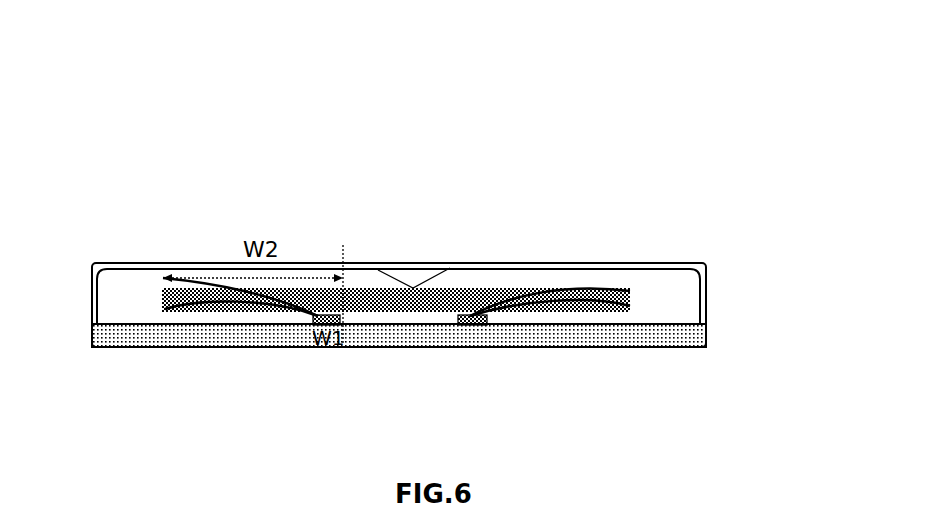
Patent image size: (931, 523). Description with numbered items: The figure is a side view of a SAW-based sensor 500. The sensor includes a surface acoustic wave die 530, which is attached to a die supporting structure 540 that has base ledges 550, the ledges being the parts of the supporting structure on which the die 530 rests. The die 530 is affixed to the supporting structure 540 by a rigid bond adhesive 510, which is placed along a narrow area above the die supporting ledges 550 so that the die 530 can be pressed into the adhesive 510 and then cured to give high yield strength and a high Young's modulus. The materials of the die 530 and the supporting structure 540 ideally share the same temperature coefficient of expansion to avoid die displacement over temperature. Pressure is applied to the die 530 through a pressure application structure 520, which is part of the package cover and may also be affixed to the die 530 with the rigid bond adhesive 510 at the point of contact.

The SAW-based sensor 500 is at (673, 75).
The rigid bond adhesive 510 is at (163, 278).
The pressure application structure 520 is at (412, 275).
The die 530 is at (487, 297).
The die supporting structure 540 is at (672, 338).
The die supporting ledges 550 is at (163, 308).